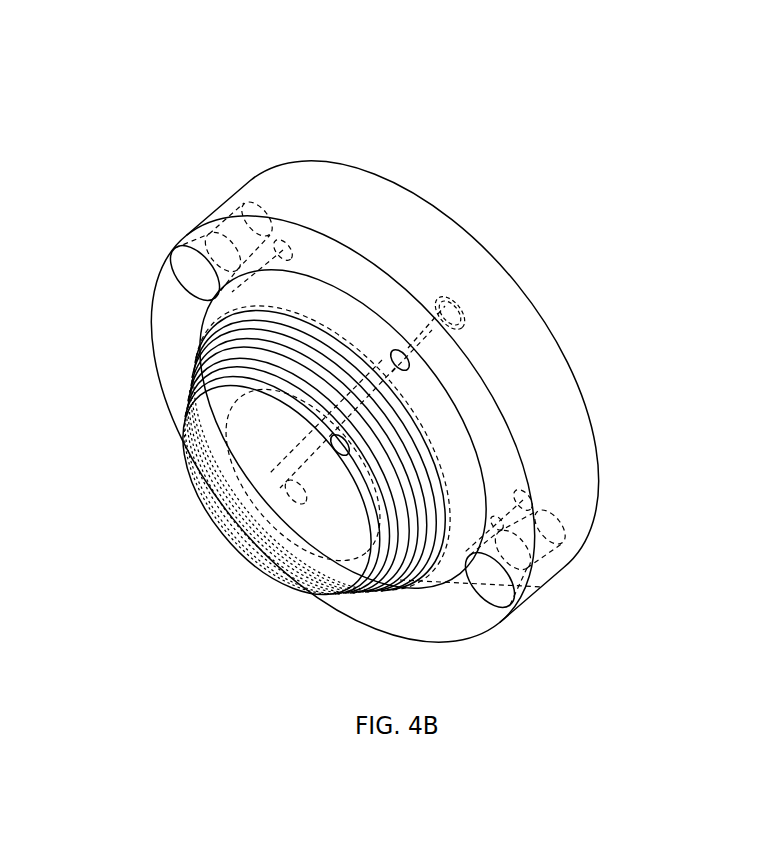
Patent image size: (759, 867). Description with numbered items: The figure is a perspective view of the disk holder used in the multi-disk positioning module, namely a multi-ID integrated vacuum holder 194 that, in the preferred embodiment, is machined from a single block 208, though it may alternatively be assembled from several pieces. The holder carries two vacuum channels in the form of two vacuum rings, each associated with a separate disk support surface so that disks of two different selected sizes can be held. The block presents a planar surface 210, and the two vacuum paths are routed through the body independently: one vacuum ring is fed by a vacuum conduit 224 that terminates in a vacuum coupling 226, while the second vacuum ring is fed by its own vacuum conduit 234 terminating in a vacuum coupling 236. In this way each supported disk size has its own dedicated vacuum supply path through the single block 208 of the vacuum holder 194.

The multi-ID integrated vacuum holder 194 is at (510, 117).
The single block 208 is at (330, 183).
The planar surface 210 is at (363, 553).
The vacuum conduit 224 is at (393, 376).
The vacuum coupling 226 is at (455, 306).
The vacuum conduit 234 is at (345, 568).
The vacuum coupling 236 is at (315, 460).